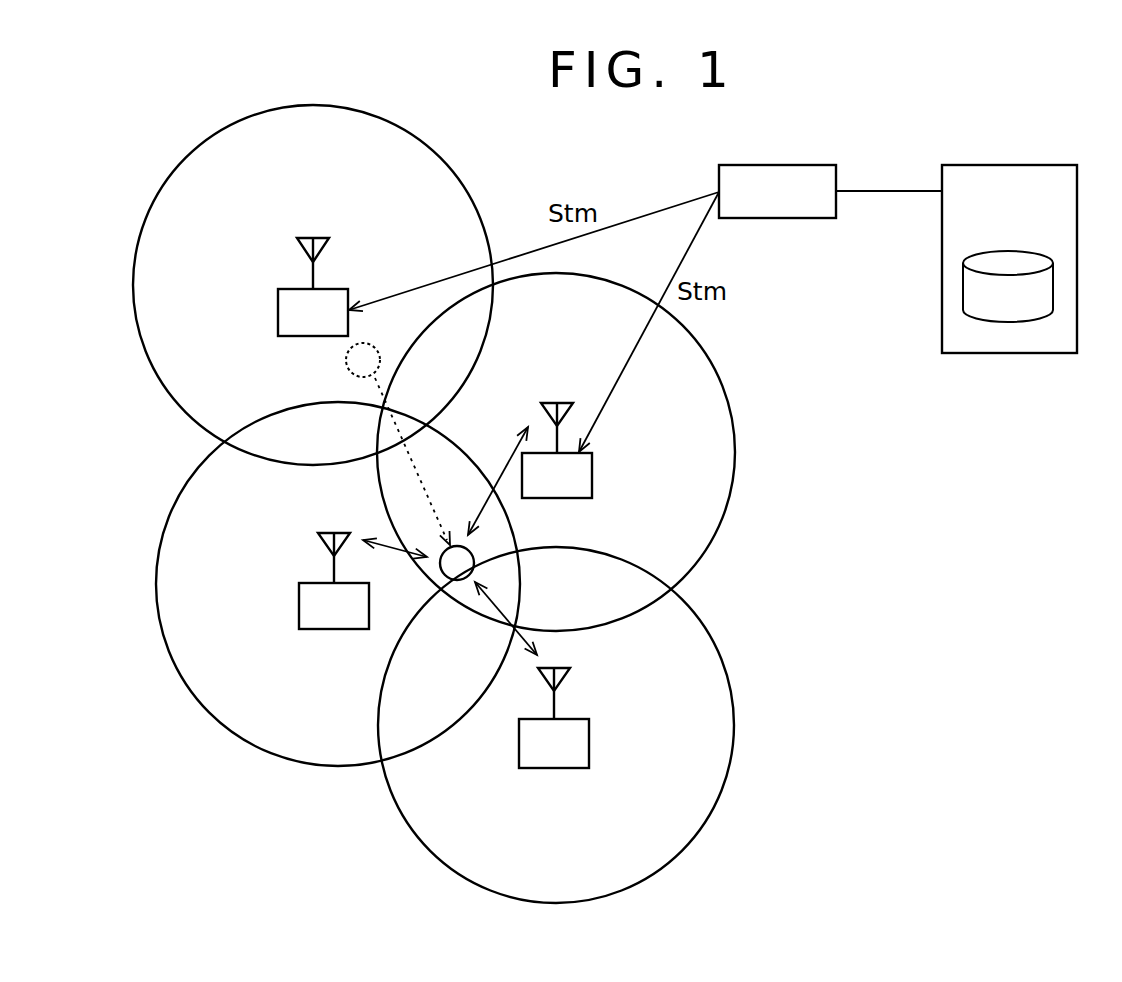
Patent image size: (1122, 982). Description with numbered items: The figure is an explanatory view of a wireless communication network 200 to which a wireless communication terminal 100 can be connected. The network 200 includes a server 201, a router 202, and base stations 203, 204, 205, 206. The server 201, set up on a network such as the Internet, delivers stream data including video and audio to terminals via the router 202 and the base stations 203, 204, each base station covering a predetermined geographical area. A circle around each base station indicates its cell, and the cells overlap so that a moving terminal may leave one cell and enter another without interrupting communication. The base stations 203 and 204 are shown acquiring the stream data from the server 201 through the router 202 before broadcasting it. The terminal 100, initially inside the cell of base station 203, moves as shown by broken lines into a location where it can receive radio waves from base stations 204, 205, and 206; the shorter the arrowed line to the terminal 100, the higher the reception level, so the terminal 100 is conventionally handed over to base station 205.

The wireless communication terminal 100 is at (473, 566).
The wireless communication network 200 is at (810, 353).
The server 201 is at (990, 165).
The router 202 is at (740, 165).
The base station 203 is at (278, 318).
The base station 204 is at (592, 478).
The base station 205 is at (299, 611).
The base station 206 is at (589, 743).